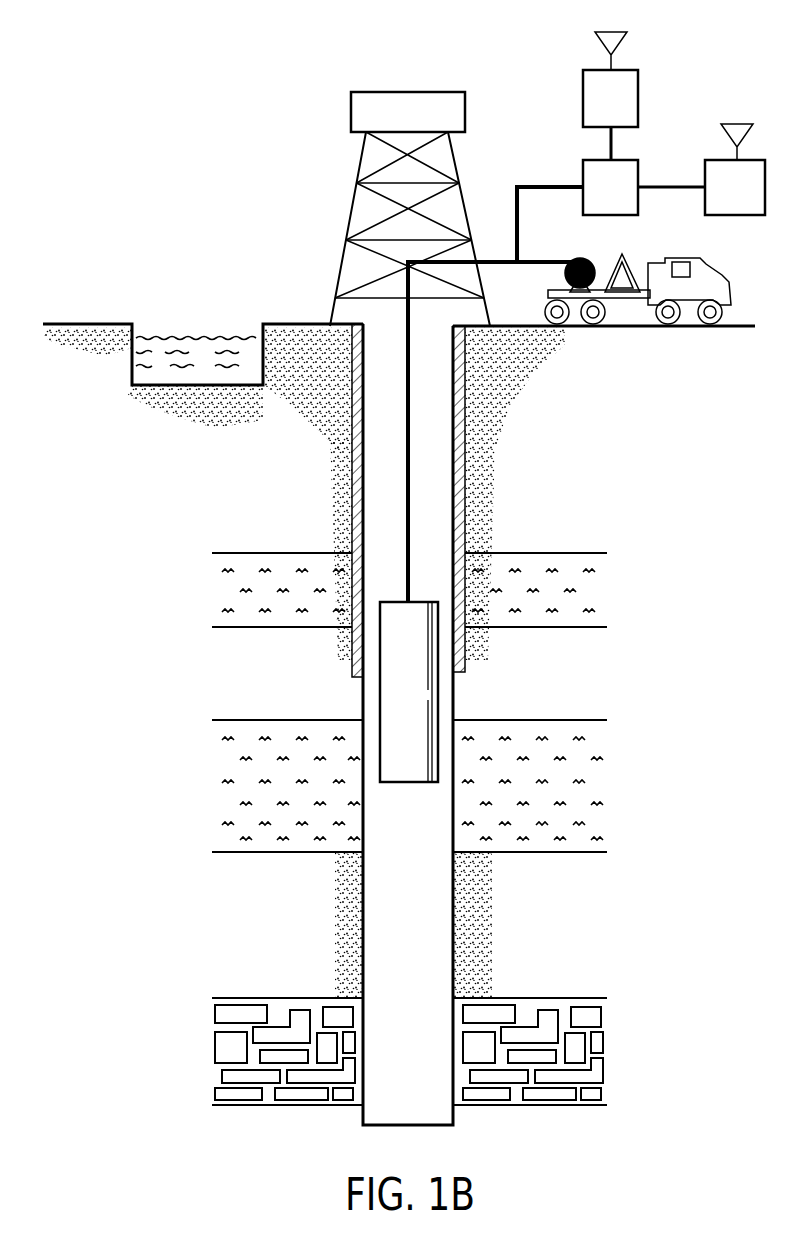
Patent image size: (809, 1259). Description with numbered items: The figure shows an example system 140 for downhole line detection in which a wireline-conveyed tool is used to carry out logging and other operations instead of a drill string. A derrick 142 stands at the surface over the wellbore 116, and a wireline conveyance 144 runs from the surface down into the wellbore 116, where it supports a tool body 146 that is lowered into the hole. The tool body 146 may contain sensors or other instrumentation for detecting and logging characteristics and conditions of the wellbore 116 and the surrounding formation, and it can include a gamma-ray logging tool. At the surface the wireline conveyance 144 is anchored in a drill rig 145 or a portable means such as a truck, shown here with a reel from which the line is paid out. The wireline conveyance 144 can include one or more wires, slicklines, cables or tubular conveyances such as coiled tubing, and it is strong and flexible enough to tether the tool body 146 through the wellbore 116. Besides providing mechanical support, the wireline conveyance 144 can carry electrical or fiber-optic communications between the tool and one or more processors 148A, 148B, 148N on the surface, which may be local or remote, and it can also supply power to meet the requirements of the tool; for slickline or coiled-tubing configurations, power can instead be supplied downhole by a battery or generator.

The system for downhole line detection 140 is at (268, 140).
The derrick / rig 142 is at (465, 147).
The wireline conveyance 144 is at (406, 268).
The drill rig 145 is at (563, 273).
The tool body 146 is at (393, 680).
The wellbore 116 is at (447, 921).
The tool processor 148A is at (583, 75).
The tool processor 148B is at (632, 162).
The tool processor 148N is at (731, 215).